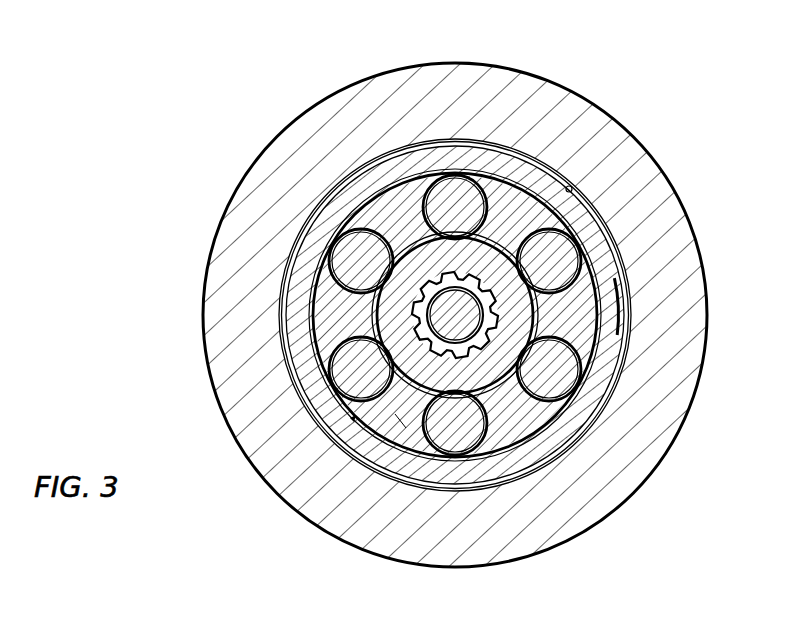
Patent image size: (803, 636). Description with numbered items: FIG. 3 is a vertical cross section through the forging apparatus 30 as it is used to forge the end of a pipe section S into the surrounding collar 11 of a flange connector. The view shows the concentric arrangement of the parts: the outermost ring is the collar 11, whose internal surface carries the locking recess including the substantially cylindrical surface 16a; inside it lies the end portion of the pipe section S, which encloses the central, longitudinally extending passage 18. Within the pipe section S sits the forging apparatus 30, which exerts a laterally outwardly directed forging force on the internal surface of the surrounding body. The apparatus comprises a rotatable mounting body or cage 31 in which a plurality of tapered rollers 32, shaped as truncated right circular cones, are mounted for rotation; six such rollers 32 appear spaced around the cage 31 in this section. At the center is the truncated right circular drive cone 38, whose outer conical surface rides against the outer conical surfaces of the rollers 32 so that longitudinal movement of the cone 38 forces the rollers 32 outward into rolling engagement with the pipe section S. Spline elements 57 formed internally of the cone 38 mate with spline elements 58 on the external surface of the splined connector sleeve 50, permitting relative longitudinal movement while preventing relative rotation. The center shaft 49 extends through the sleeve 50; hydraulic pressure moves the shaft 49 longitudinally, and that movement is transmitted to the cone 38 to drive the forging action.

The collar 11 is at (452, 78).
The pipe section S is at (600, 220).
The cylindrical surface 16a is at (575, 213).
The passage 18 is at (594, 280).
The spline elements 58 is at (498, 238).
The spline elements 57 is at (516, 224).
The tapered rollers 32 is at (345, 262).
The forging apparatus 30 is at (352, 420).
The cage 31 is at (400, 420).
The drive cone 38 is at (520, 317).
The splined connector sleeve 50 is at (487, 330).
The center shaft 49 is at (462, 333).